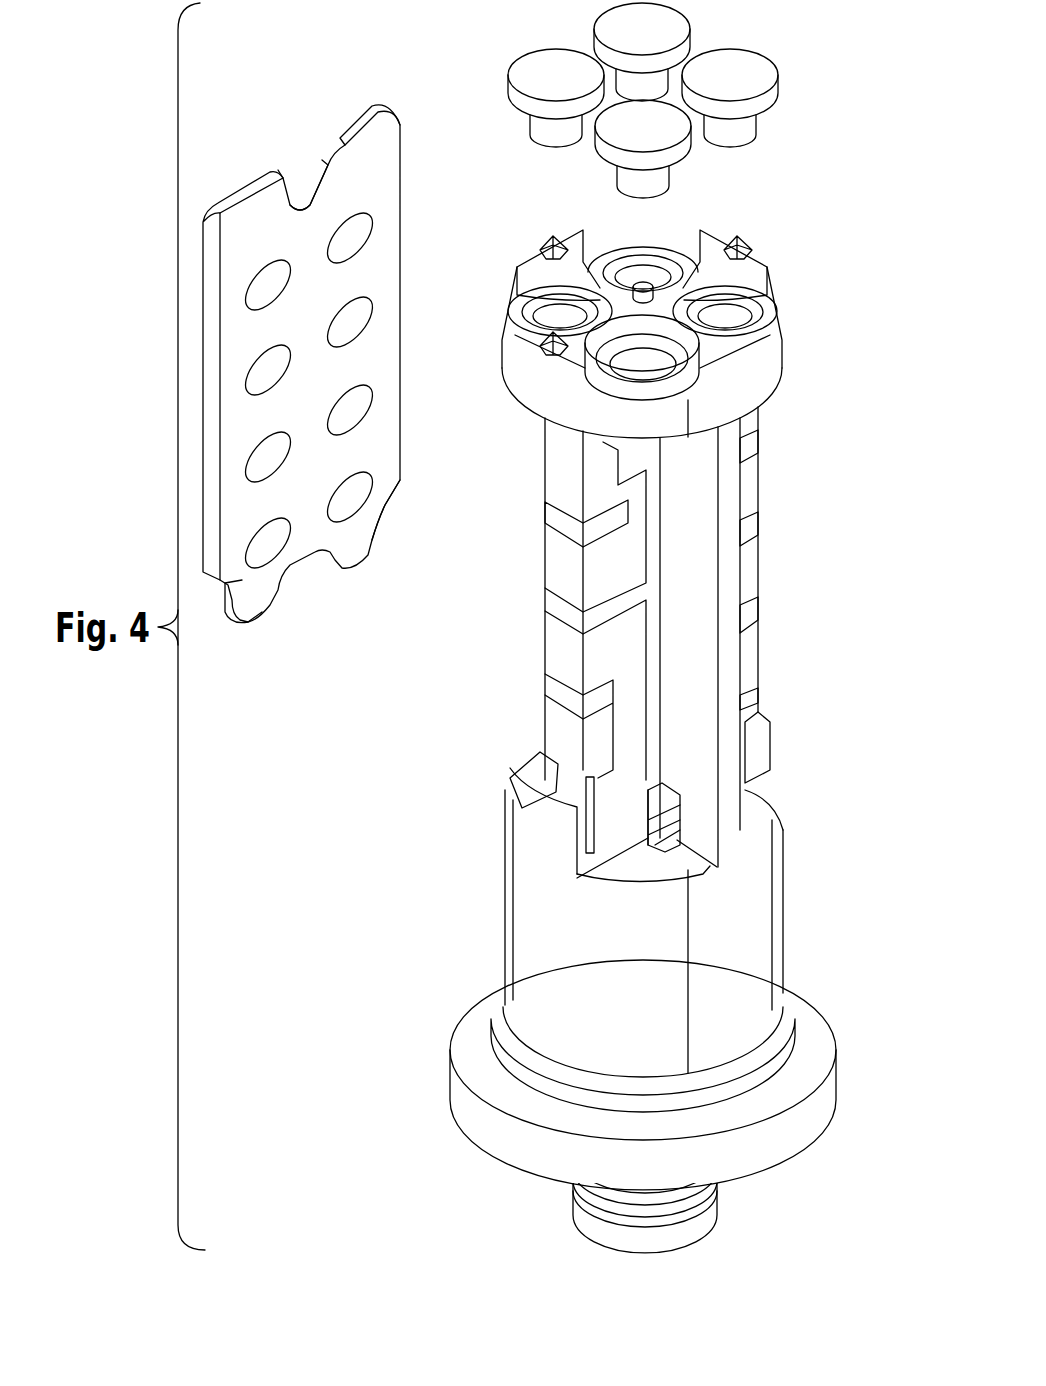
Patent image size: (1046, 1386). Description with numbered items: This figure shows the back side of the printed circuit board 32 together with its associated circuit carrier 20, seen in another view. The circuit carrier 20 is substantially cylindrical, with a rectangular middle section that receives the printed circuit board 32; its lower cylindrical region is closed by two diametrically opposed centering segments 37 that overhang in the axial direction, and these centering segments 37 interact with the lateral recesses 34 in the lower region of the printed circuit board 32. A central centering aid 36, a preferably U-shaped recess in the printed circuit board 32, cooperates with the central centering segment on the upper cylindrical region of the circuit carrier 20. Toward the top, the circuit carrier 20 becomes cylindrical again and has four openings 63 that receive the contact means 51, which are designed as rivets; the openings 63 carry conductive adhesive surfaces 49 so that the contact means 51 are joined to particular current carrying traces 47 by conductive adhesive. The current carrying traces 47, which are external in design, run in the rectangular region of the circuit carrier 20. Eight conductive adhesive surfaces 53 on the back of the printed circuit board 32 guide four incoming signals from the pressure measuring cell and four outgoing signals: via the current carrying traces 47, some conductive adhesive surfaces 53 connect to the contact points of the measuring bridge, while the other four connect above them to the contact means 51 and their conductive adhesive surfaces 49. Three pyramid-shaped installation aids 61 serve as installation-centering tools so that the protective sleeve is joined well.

The circuit carrier 20 is at (758, 798).
The printed circuit board 32 is at (347, 365).
The lateral recesses 34 is at (380, 513).
The central centering aid 36 is at (305, 187).
The centering segments 37 is at (540, 797).
The current carrying traces 47 is at (563, 522).
The conductive adhesive surfaces 49 is at (770, 310).
The contact means 51 is at (740, 70).
The conductive adhesive surfaces 53 is at (350, 412).
The installation aids 61 is at (555, 232).
The openings 63 is at (528, 322).